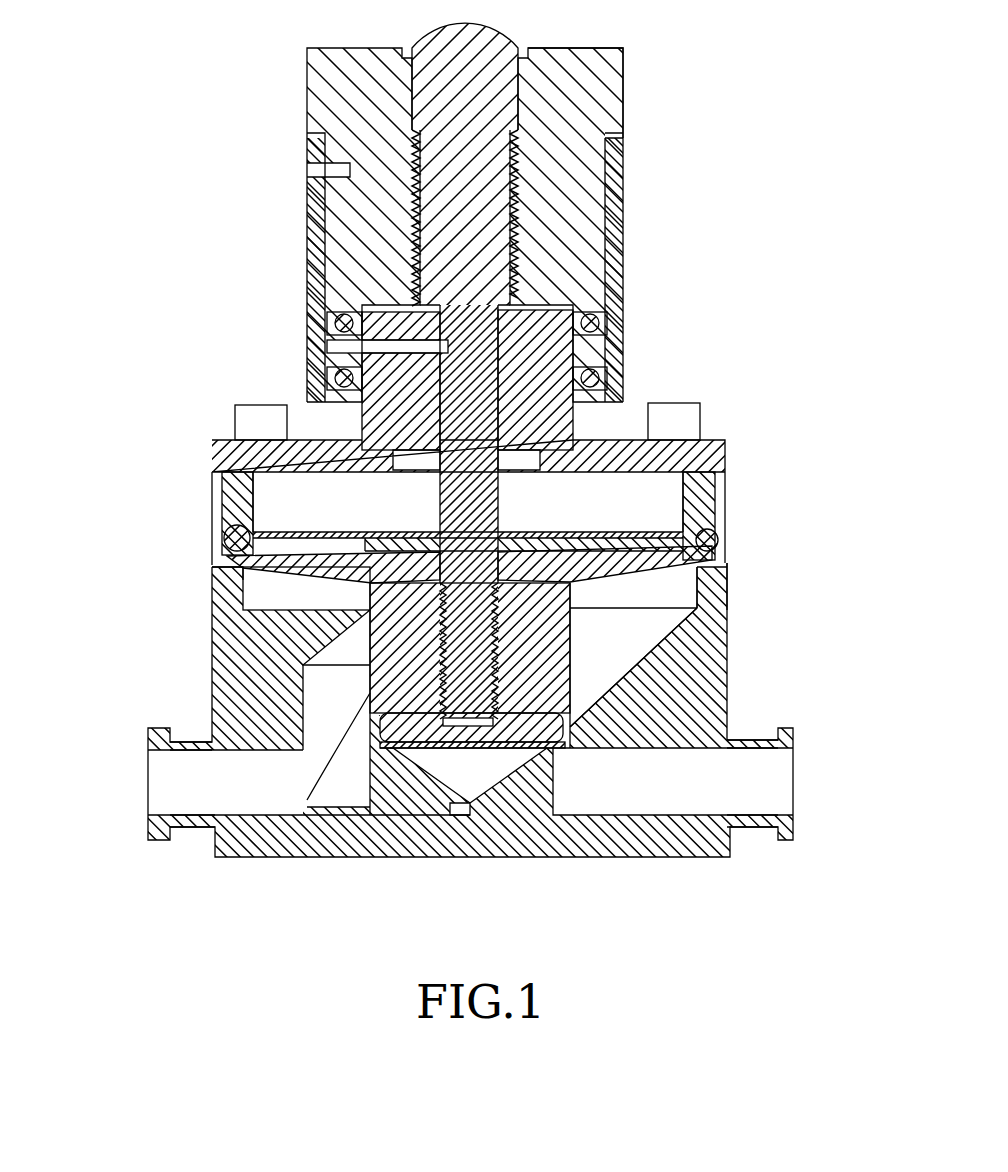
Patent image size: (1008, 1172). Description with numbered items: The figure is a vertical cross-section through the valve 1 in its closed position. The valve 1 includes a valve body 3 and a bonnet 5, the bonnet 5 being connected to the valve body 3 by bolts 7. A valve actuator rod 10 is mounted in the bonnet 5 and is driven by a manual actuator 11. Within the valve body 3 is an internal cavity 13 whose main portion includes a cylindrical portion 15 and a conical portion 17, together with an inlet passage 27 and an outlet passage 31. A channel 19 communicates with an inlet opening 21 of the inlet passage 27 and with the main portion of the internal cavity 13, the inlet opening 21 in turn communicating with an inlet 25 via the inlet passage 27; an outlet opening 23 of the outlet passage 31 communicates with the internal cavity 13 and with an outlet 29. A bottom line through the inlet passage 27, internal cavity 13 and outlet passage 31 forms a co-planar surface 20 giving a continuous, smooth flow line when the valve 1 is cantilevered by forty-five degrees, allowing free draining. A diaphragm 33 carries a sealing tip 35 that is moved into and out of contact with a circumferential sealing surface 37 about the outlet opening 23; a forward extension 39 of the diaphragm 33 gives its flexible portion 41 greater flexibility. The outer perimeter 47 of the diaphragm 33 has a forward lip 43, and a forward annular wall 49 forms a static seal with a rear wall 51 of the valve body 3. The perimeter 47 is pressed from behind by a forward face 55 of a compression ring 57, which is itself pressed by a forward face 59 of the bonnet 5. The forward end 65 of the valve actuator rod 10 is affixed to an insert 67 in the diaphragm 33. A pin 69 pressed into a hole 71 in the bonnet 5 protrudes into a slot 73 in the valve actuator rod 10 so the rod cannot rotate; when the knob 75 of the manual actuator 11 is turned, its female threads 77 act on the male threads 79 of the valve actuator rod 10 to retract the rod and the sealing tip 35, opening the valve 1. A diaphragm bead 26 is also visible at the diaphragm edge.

The valve 1 is at (170, 198).
The valve body 3 is at (710, 648).
The bonnet 5 is at (720, 447).
The bolts 7 is at (248, 410).
The valve actuator rod 10 is at (455, 517).
The manual actuator 11 is at (676, 160).
The internal cavity 13 is at (619, 647).
The cylindrical portion 15 is at (697, 600).
The conical portion 17 is at (290, 640).
The channel 19 is at (340, 735).
The co-planar surface 20 is at (328, 793).
The inlet opening 21 is at (300, 775).
The outlet opening 23 is at (472, 765).
The inlet 25 is at (150, 790).
The diaphragm bead 26 is at (232, 530).
The inlet passage 27 is at (185, 765).
The outlet 29 is at (797, 790).
The outlet passage 31 is at (678, 805).
The diaphragm 33 is at (345, 598).
The sealing tip 35 is at (465, 718).
The circumferential sealing surface 37 is at (572, 712).
The forward extension 39 is at (650, 665).
The flexible portion 41 is at (630, 555).
The forward lip 43 is at (225, 570).
The outer perimeter 47 is at (727, 556).
The forward annular wall 49 is at (712, 565).
The rear wall 51 is at (705, 530).
The forward face 55 is at (240, 500).
The compression ring 57 is at (258, 490).
The forward face 59 is at (725, 488).
The forward end 65 is at (420, 720).
The insert 67 is at (520, 735).
The pin 69 is at (415, 348).
The hole 71 is at (345, 355).
The slot 73 is at (450, 430).
The knob 75 is at (604, 78).
The female threads 77 is at (512, 215).
The male threads 79 is at (420, 240).